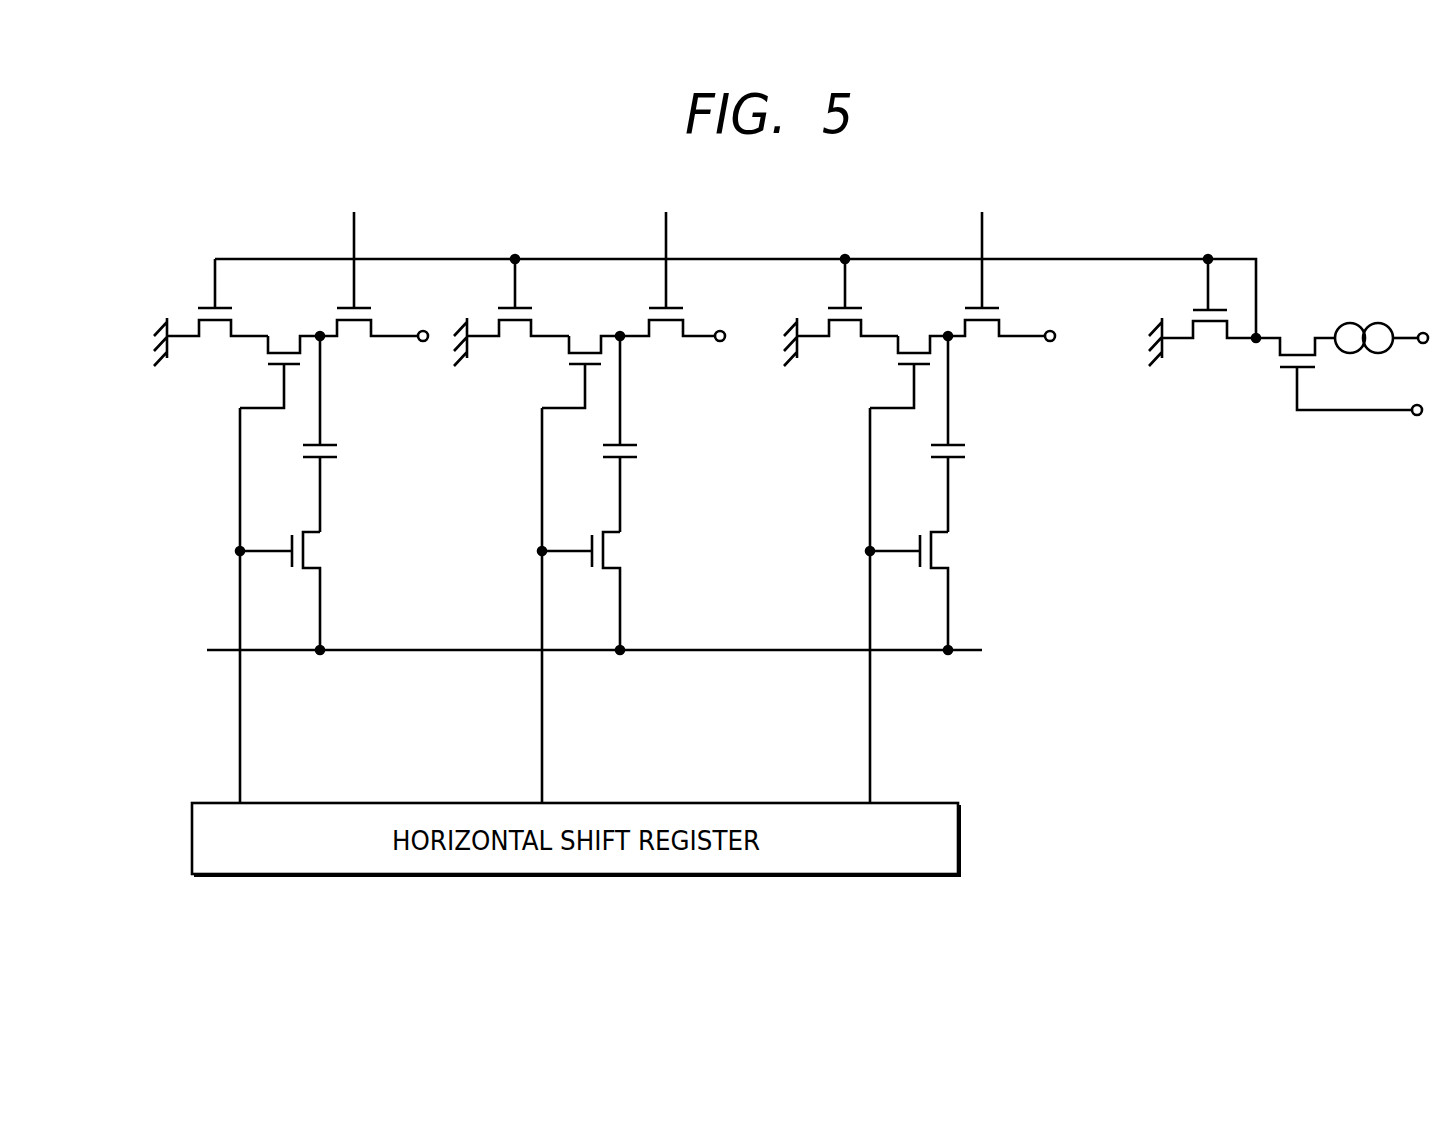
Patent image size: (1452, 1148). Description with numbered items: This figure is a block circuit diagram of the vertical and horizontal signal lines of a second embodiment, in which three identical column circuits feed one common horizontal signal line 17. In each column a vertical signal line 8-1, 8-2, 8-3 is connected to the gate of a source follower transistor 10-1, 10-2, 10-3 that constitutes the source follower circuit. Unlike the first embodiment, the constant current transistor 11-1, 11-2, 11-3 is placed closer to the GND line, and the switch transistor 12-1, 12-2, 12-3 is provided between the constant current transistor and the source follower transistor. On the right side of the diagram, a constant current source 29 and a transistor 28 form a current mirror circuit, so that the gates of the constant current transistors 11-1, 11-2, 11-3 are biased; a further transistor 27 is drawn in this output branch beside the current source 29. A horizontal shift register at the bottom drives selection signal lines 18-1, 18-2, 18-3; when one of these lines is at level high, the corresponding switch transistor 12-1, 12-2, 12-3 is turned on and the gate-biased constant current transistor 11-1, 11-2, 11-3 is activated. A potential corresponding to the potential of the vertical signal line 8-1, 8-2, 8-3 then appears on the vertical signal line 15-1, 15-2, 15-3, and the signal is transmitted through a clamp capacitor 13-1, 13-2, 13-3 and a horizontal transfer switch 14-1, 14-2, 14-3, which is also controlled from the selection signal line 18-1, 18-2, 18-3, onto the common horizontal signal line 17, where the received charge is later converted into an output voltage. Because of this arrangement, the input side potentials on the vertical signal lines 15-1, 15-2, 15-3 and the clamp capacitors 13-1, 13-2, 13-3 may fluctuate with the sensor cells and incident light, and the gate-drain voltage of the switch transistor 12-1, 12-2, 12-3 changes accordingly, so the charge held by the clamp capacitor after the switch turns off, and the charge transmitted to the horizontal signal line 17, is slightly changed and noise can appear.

The vertical signal line 8-1 is at (356, 228).
The vertical signal line 8-2 is at (668, 228).
The vertical signal line 8-3 is at (984, 228).
The source follower transistor 10-1 is at (352, 328).
The source follower transistor 10-2 is at (664, 328).
The source follower transistor 10-3 is at (980, 328).
The constant current transistor 11-1 is at (213, 328).
The constant current transistor 11-2 is at (513, 328).
The constant current transistor 11-3 is at (843, 328).
The switch transistor 12-1 is at (284, 350).
The switch transistor 12-2 is at (585, 350).
The switch transistor 12-3 is at (914, 350).
The clamp capacitor 13-1 is at (338, 450).
The clamp capacitor 13-2 is at (638, 450).
The clamp capacitor 13-3 is at (966, 450).
The horizontal transfer switch 14-1 is at (325, 552).
The horizontal transfer switch 14-2 is at (625, 552).
The horizontal transfer switch 14-3 is at (953, 552).
The vertical signal line 15-1 is at (322, 410).
The vertical signal line 15-2 is at (622, 410).
The vertical signal line 15-3 is at (950, 410).
The common horizontal signal line 17 is at (385, 653).
The selection signal line 18-1 is at (242, 742).
The selection signal line 18-2 is at (544, 742).
The selection signal line 18-3 is at (872, 742).
The transistor 27 is at (1297, 344).
The transistor 28 is at (1212, 330).
The constant current source 29 is at (1363, 319).